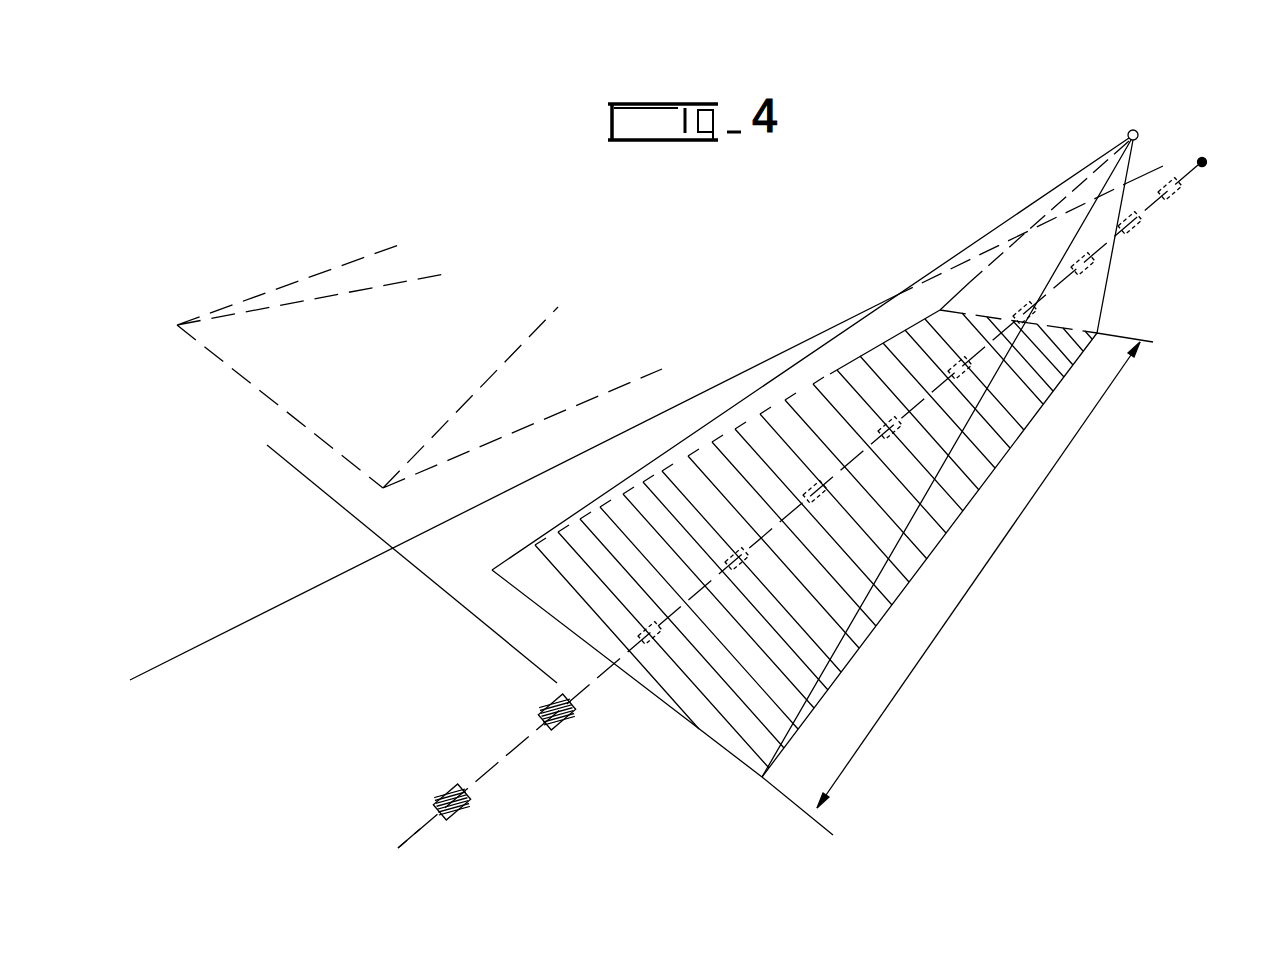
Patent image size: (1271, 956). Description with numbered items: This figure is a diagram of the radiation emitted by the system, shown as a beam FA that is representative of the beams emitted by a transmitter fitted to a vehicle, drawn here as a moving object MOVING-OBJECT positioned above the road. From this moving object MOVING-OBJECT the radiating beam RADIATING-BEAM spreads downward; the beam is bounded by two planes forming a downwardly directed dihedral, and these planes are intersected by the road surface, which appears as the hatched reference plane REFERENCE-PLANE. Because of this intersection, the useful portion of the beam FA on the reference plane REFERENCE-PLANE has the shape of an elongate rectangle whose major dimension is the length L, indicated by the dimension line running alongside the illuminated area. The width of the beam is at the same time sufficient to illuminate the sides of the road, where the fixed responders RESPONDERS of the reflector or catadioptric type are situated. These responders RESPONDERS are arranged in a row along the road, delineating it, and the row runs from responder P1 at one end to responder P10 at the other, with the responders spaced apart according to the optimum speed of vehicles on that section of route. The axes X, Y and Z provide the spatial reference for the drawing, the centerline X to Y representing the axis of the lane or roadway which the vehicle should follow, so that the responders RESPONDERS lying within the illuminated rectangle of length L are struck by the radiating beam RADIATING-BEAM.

The moving object MOVING-OBJECT is at (1128, 133).
The radiating beam RADIATING-BEAM is at (890, 583).
The reference plane REFERENCE-PLANE is at (1063, 377).
The responders RESPONDERS is at (1013, 507).
The responder P1 is at (1221, 163).
The responder P10 is at (386, 836).
The length L is at (978, 575).
The beam FA is at (705, 722).
The X axis X is at (627, 431).
The Y axis Y is at (1147, 160).
The Z axis Z is at (404, 563).